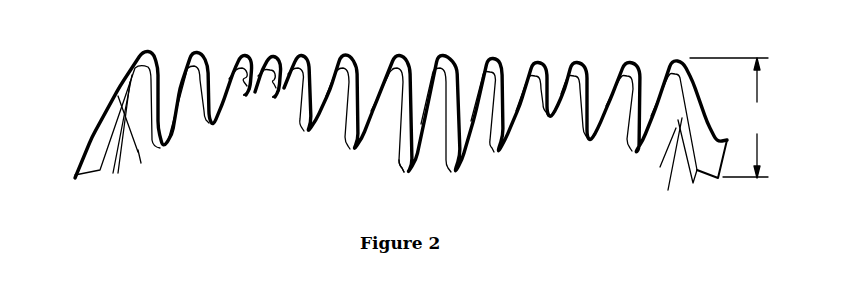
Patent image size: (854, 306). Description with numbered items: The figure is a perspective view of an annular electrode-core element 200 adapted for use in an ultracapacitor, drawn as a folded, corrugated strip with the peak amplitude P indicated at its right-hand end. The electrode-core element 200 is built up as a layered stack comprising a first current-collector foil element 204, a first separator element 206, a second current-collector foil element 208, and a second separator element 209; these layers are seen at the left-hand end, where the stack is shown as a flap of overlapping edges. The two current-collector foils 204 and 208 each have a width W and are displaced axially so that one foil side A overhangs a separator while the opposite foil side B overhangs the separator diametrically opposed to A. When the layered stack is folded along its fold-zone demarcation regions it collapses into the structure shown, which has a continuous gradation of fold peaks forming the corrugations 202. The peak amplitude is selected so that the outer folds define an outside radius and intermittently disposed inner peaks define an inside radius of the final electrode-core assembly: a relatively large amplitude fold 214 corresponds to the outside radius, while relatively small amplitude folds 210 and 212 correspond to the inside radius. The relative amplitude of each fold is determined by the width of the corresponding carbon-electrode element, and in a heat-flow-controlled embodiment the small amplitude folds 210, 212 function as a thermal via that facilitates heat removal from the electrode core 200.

The annular electrode-core element 200 is at (420, 118).
The corrugations 202 is at (536, 57).
The first current-collector foil element 204 is at (94, 145).
The first separator element 206 is at (103, 172).
The second current-collector foil element 208 is at (116, 171).
The second separator element 209 is at (135, 147).
The relatively small amplitude fold 210 is at (244, 96).
The small amplitude fold 212 is at (278, 96).
The large amplitude fold 214 is at (408, 162).